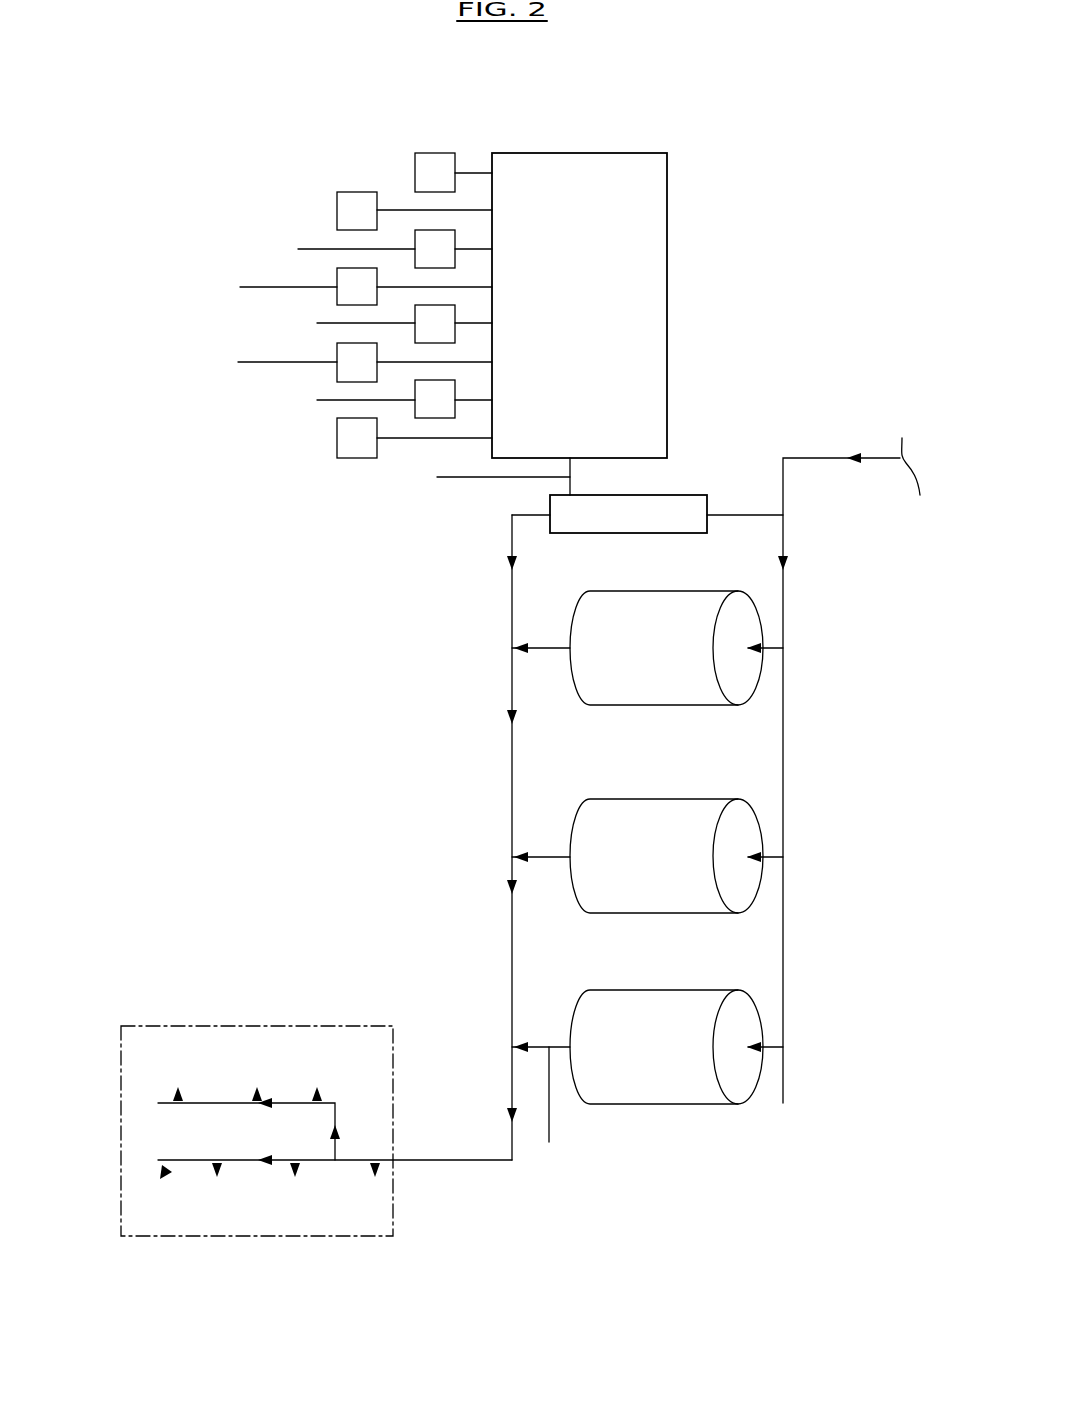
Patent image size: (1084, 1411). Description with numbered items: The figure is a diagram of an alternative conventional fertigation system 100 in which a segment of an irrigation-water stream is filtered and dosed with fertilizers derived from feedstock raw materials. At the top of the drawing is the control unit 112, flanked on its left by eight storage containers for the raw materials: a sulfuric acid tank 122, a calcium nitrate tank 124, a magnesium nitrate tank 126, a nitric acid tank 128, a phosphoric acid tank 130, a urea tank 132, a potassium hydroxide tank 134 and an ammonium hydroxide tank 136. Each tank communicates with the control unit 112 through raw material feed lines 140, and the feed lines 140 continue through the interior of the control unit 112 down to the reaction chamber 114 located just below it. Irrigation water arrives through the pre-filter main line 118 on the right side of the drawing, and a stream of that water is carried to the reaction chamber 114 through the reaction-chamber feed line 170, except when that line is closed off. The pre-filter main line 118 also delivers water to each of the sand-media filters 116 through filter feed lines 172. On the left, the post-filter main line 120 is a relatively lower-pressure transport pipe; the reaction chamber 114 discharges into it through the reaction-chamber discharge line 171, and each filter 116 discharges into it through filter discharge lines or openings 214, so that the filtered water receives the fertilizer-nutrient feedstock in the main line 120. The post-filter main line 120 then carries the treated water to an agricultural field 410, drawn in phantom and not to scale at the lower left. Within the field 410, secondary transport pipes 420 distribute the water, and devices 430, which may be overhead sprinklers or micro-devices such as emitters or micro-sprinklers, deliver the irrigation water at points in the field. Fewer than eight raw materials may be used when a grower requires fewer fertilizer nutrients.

The alternative system 100 is at (190, 165).
The control unit 112 is at (668, 265).
The reaction chamber 114 is at (687, 495).
The filters 116 is at (657, 670).
The pre-filter main line 118 is at (783, 780).
The post-filter main line 120 is at (510, 780).
The sulfuric acid tank 122 is at (415, 153).
The calcium nitrate tank 124 is at (337, 192).
The magnesium nitrate tank 126 is at (367, 249).
The nitric acid tank 128 is at (338, 286).
The phosphoric acid tank 130 is at (378, 324).
The urea tank 132 is at (338, 362).
The potassium hydroxide tank 134 is at (387, 399).
The ammonium hydroxide tank 136 is at (335, 440).
The raw material feed lines 140 is at (475, 173).
The reaction-chamber feed line 170 is at (747, 513).
The reaction-chamber discharge line 171 is at (527, 513).
The filter feed lines 172 is at (763, 650).
The filter discharge lines 214 is at (540, 643).
The agricultural field 410 is at (258, 1026).
The transport pipes 420 is at (297, 1103).
The devices 430 is at (161, 1172).